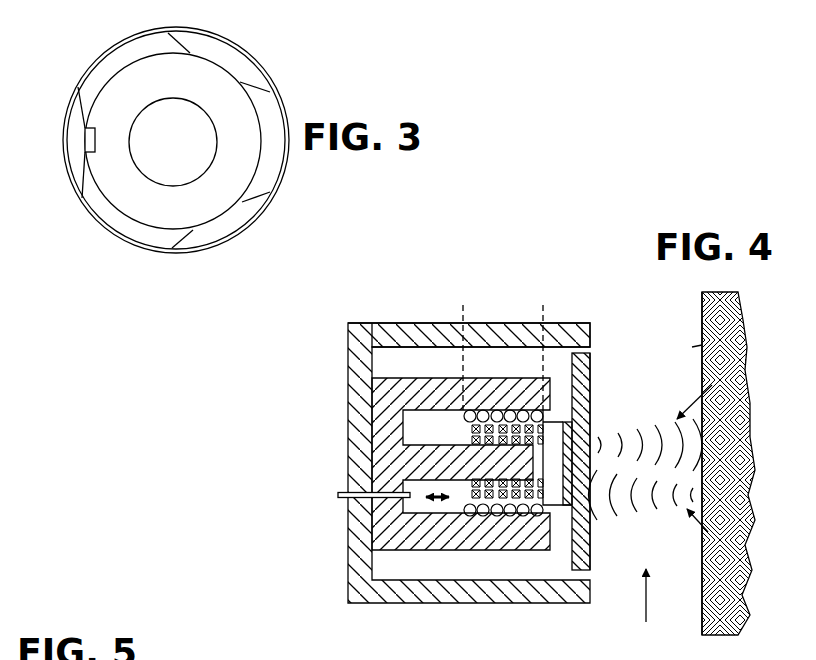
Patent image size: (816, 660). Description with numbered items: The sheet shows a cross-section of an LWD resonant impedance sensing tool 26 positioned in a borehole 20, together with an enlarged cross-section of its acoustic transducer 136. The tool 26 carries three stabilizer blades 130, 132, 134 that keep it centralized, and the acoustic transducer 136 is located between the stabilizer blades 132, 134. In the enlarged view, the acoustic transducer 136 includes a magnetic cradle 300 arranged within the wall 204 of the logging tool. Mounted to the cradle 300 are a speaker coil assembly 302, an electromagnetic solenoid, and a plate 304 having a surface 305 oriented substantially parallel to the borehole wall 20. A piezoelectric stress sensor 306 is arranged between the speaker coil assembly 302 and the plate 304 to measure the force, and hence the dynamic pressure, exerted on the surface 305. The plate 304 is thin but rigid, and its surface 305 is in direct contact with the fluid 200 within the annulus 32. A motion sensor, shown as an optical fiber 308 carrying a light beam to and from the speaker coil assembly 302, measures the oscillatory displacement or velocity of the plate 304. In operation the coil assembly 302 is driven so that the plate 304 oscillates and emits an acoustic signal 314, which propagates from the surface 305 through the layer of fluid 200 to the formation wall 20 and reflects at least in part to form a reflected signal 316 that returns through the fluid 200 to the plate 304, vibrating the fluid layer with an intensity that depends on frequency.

In FIG. 3, the borehole 20 is at (195, 248).
In FIG. 4, the borehole 20 is at (702, 310).
In FIG. 3, the resonant impedance sensing tool 26 is at (84, 163).
In FIG. 4, the annulus 32 is at (737, 320).
In FIG. 3, the stabilizer blade 130 is at (270, 97).
In FIG. 3, the stabilizer blade 132 is at (84, 92).
In FIG. 3, the stabilizer blade 134 is at (147, 240).
In FIG. 3, the acoustic transducer 136 is at (84, 138).
In FIG. 4, the acoustic transducer 136 is at (359, 312).
In FIG. 4, the fluid 200 is at (646, 612).
In FIG. 4, the wall 204 is at (567, 332).
In FIG. 4, the magnetic cradle 300 is at (382, 364).
In FIG. 4, the speaker coil assembly 302 is at (543, 310).
In FIG. 4, the plate 304 is at (582, 363).
In FIG. 4, the surface 305 is at (591, 384).
In FIG. 4, the piezoelectric stress sensor 306 is at (574, 423).
In FIG. 4, the optical fiber 308 is at (352, 493).
In FIG. 4, the acoustic output signal 314 is at (735, 379).
In FIG. 4, the reflected signal 316 is at (737, 547).